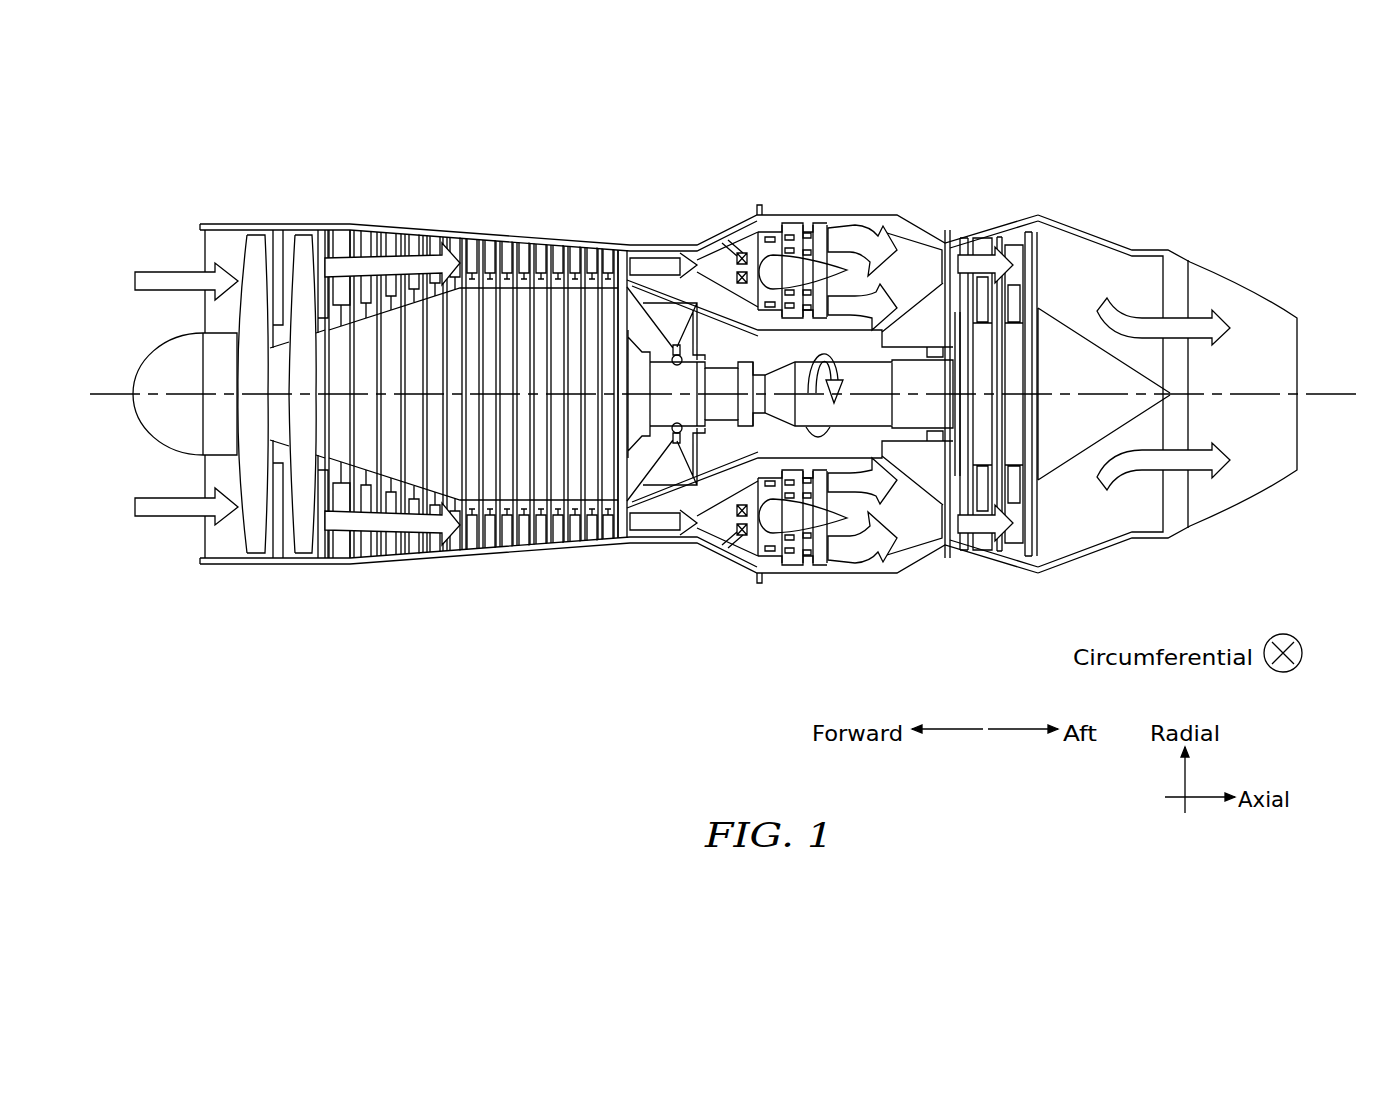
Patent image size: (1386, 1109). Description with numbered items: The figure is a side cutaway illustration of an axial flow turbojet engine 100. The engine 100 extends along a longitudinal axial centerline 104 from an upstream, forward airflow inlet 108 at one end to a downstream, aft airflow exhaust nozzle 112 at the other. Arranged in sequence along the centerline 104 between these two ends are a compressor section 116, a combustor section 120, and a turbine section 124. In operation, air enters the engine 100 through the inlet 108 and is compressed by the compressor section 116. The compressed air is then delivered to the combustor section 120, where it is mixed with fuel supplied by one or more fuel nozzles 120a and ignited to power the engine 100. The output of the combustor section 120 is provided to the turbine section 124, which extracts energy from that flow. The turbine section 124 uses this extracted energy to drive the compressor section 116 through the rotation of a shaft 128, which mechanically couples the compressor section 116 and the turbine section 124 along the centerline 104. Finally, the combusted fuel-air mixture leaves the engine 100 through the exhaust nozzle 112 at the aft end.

The axial flow turbojet engine 100 is at (1237, 222).
The longitudinal axial centerline 104 is at (1337, 397).
The airflow inlet 108 is at (213, 532).
The airflow exhaust nozzle 112 is at (1143, 537).
The compressor section 116 is at (482, 545).
The combustor section 120 is at (710, 523).
The fuel nozzle 120a is at (750, 533).
The turbine section 124 is at (982, 437).
The shaft 128 is at (857, 407).